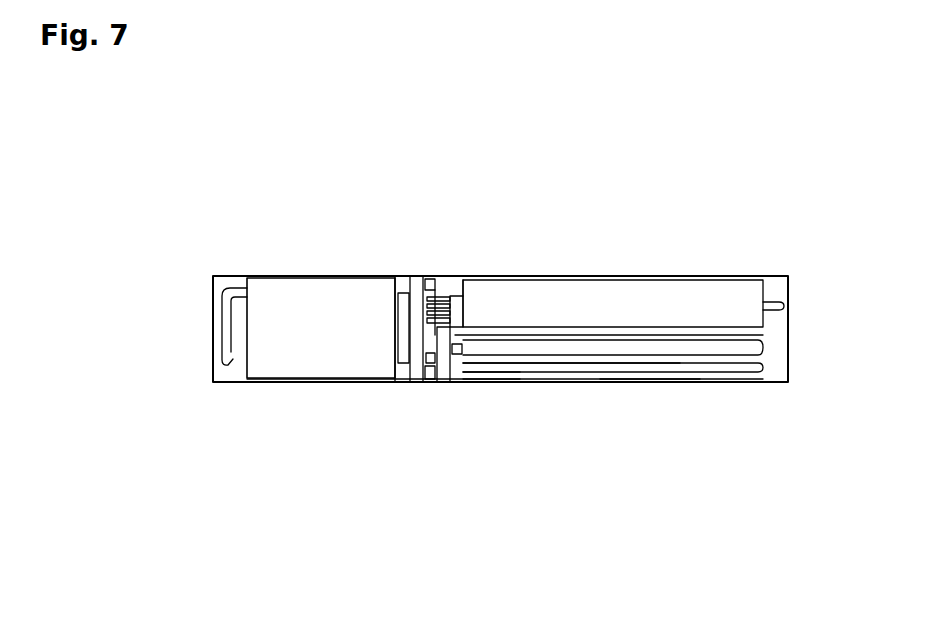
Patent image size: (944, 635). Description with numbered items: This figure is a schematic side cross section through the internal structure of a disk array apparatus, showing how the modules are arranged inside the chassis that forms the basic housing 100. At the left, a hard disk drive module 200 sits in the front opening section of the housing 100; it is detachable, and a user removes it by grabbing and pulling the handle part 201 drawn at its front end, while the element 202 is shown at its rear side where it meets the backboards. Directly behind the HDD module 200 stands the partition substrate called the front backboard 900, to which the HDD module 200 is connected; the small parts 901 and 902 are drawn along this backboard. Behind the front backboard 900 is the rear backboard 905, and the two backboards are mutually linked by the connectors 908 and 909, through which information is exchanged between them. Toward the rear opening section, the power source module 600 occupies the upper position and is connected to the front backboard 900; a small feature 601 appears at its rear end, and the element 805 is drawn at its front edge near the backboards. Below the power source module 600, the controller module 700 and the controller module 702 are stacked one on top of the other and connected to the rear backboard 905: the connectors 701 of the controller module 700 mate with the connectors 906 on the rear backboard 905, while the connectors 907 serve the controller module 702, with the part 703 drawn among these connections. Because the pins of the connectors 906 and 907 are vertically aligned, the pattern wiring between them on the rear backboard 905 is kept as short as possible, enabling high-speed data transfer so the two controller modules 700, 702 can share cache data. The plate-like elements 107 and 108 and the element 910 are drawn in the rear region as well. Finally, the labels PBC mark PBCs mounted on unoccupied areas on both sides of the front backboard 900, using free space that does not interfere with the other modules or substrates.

The basic housing 100 is at (212, 287).
The hard disk drive module 200 is at (303, 357).
The handle part 201 is at (220, 338).
The cell wall 202 is at (395, 308).
The power source module 600 is at (558, 298).
The latch tab 601 is at (772, 297).
The controller module 700 is at (695, 350).
The connector 701 is at (507, 375).
The controller module 702 is at (643, 380).
The lead 703 is at (472, 382).
The connector block 805 is at (440, 277).
The front backboard 900 is at (417, 382).
The terminal 901 is at (427, 279).
The insulating plate 902 is at (399, 293).
The rear backboard 905 is at (443, 382).
The connector 906 is at (483, 378).
The connector 907 is at (457, 382).
The connector 908 is at (433, 360).
The connector 909 is at (433, 355).
The terminal 910 is at (463, 295).
The conductive plate 107 is at (717, 335).
The conductive plate 108 is at (672, 363).
The element PBC is at (391, 380).